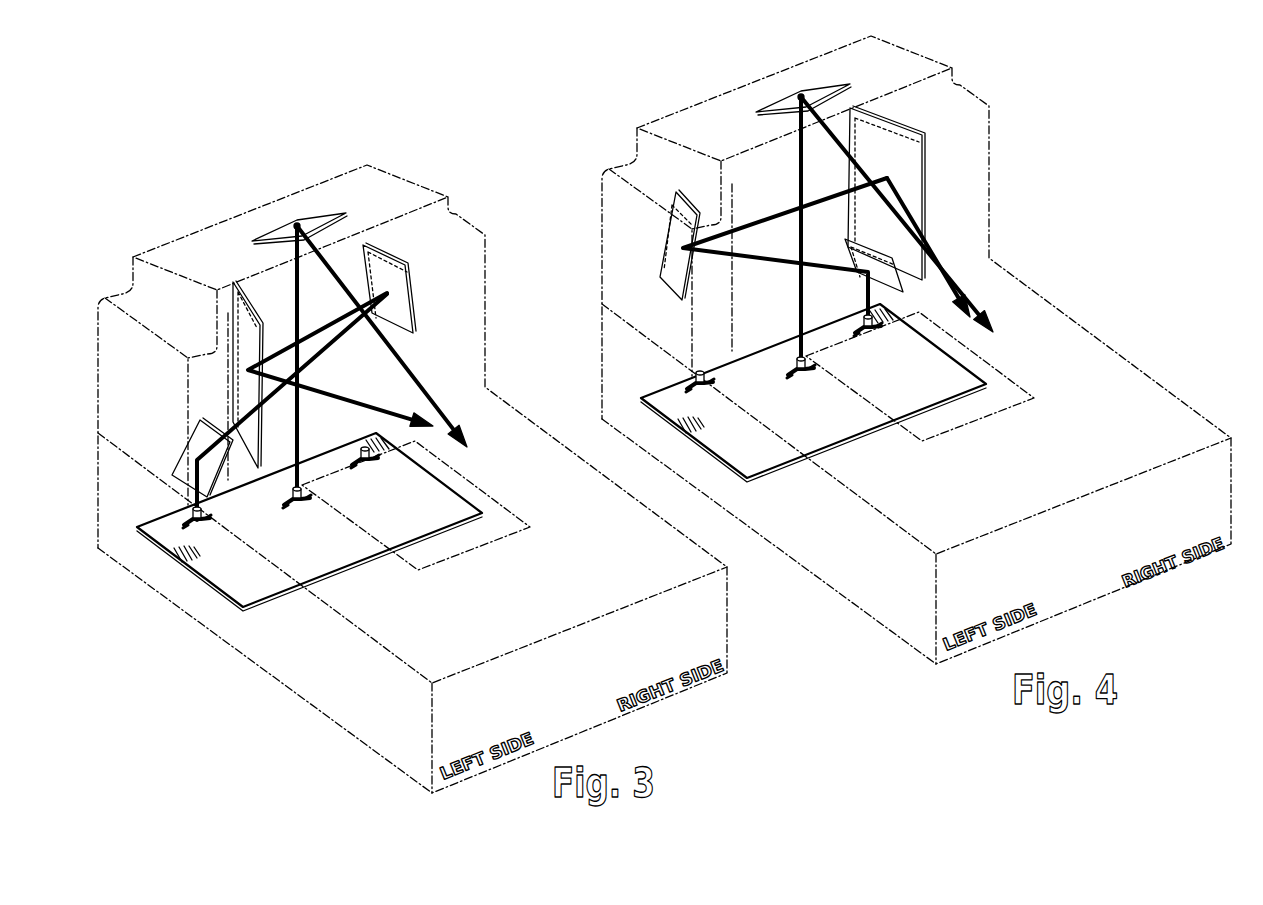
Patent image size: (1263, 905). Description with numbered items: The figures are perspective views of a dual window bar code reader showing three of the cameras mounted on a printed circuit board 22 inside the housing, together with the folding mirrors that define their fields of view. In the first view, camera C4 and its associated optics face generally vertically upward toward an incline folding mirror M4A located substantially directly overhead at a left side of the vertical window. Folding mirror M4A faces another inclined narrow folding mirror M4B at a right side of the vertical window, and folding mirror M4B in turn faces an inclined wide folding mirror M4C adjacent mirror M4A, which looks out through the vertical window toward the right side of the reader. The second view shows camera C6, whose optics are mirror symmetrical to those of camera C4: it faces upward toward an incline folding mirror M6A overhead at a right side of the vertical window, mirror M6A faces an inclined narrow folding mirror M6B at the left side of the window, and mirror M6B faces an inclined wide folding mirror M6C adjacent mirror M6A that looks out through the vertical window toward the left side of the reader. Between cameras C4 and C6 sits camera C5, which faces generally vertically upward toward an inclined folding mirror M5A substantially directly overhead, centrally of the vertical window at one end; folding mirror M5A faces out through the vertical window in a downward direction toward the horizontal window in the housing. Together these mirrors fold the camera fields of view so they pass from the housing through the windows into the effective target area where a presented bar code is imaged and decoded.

In FIG. 3, the printed circuit board 22 is at (362, 544).
In FIG. 4, the printed circuit board 22 is at (758, 447).
In FIG. 3, the inclined folding mirror M5A is at (303, 223).
In FIG. 4, the inclined folding mirror M5A is at (800, 99).
In FIG. 3, the incline folding mirror M4A is at (197, 444).
In FIG. 3, the inclined narrow folding mirror M4B is at (395, 278).
In FIG. 3, the inclined wide folding mirror M4C is at (245, 364).
In FIG. 4, the incline folding mirror M6A is at (905, 288).
In FIG. 4, the inclined narrow folding mirror M6B is at (678, 232).
In FIG. 4, the inclined wide folding mirror M6C is at (907, 165).
In FIG. 3, the camera C4 is at (197, 528).
In FIG. 4, the camera C4 is at (698, 385).
In FIG. 3, the camera C5 is at (297, 508).
In FIG. 4, the camera C5 is at (804, 382).
In FIG. 3, the camera C6 is at (368, 466).
In FIG. 4, the camera C6 is at (880, 336).